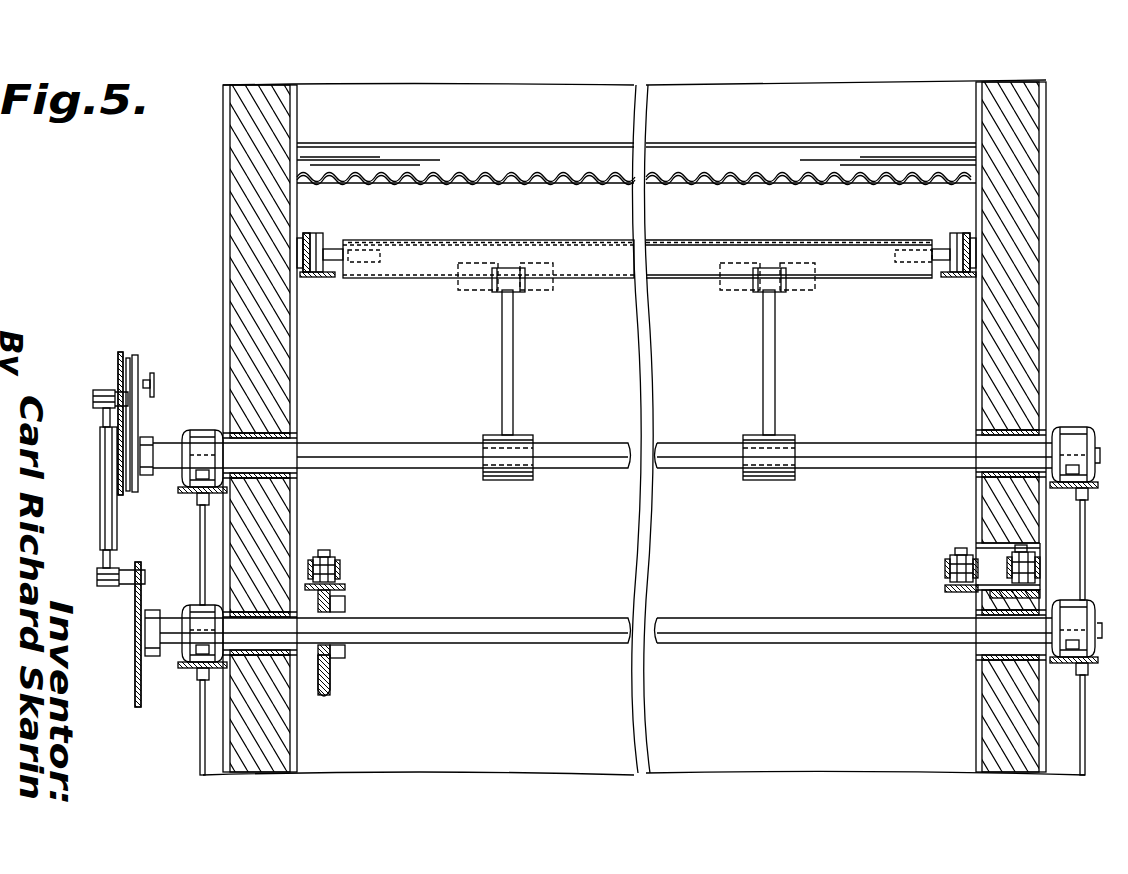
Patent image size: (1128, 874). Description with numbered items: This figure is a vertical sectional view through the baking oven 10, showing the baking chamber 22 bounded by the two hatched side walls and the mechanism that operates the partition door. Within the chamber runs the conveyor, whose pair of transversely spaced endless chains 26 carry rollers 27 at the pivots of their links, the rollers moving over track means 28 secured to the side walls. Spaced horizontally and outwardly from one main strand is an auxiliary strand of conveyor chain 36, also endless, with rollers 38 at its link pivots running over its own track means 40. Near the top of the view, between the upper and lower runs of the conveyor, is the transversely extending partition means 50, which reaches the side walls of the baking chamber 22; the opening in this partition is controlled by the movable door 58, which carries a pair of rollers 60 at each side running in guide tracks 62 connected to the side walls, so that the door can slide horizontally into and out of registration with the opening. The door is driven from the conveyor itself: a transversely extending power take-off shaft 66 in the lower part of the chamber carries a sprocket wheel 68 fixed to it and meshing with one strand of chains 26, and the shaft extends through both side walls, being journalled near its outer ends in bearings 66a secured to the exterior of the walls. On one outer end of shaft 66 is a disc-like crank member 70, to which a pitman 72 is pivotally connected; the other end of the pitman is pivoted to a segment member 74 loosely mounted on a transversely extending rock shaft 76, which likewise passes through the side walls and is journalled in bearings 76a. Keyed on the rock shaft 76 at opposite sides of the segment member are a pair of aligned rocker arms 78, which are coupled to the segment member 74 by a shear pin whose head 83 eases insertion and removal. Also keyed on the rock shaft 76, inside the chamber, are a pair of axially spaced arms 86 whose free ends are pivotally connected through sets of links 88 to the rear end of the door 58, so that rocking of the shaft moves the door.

The baking oven 10 is at (220, 272).
The baking chamber 22 is at (962, 120).
The endless chains 26 is at (338, 563).
The rollers 27 is at (322, 557).
The track means 28 is at (335, 590).
The auxiliary strand of conveyor chain 36 is at (1036, 565).
The rollers 38 is at (1022, 553).
The track means 40 is at (1040, 596).
The partition means 50 is at (366, 178).
The movable door 58 is at (442, 240).
The rollers 60 is at (320, 246).
The guide tracks 62 is at (315, 278).
The power take-off shaft 66 is at (457, 643).
The bearings 66a is at (190, 605).
The sprocket wheel 68 is at (332, 662).
The crank member 70 is at (135, 660).
The pitman 72 is at (102, 490).
The segment member 74 is at (140, 440).
The rock shaft 76 is at (848, 468).
The bearings 76a is at (204, 430).
The rocker arms 78 is at (116, 383).
The head 83 is at (154, 388).
The arms 86 is at (513, 375).
The links 88 is at (497, 292).